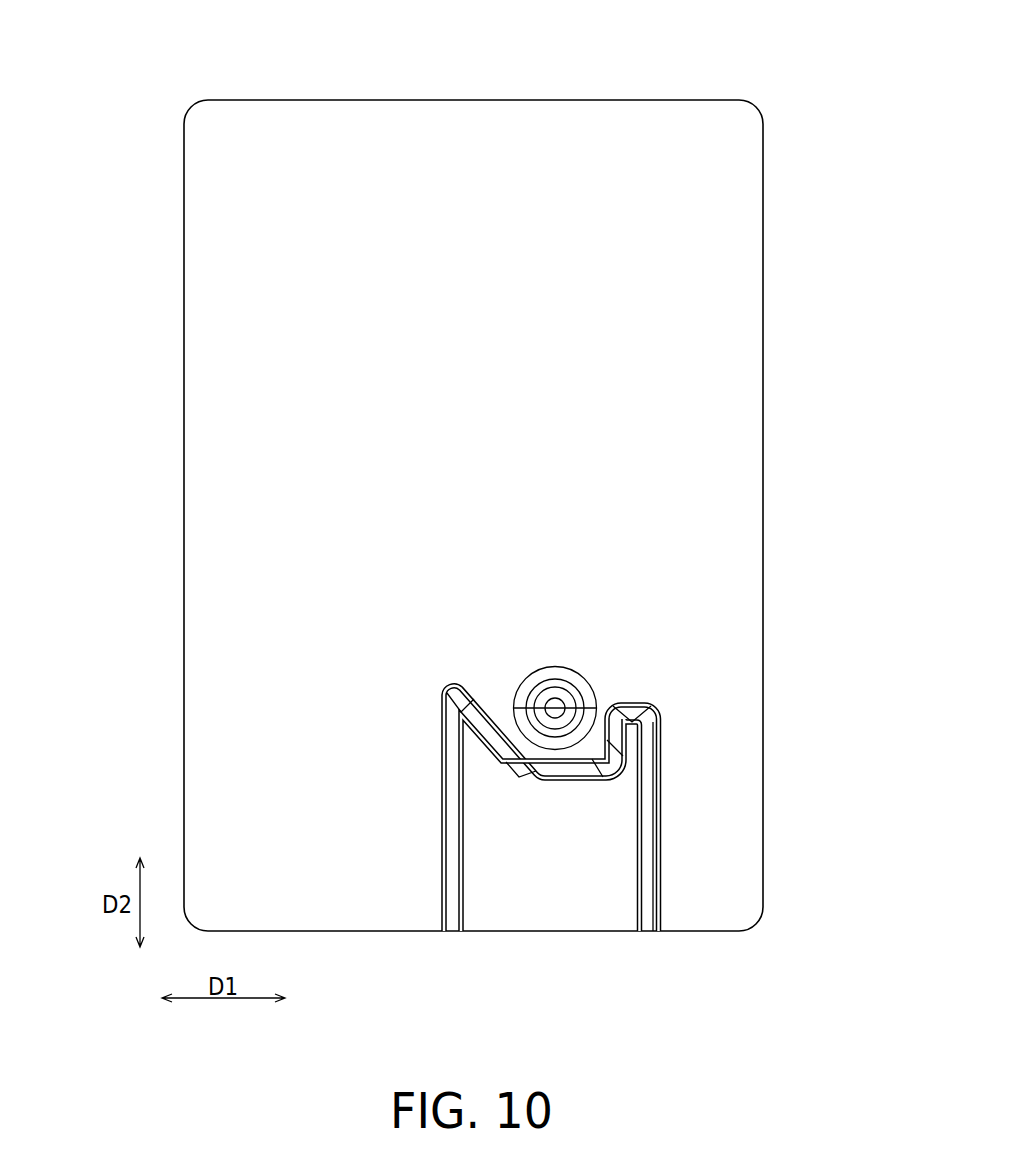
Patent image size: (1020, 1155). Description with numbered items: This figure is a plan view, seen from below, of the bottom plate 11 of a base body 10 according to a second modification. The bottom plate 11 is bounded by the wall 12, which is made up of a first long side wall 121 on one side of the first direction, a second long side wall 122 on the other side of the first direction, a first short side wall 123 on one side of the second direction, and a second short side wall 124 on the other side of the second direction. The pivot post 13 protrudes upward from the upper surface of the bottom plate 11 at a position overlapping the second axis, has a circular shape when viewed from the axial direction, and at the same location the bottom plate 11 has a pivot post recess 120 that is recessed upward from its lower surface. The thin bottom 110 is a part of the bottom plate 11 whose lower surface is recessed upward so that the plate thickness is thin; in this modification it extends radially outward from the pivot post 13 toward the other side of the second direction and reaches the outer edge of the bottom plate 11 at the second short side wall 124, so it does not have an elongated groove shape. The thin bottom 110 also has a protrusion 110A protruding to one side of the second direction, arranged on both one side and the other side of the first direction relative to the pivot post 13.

The base body 10 is at (473, 526).
The bottom plate 11 is at (473, 518).
The wall 12 is at (473, 518).
The first long side wall 121 is at (766, 484).
The second long side wall 122 is at (183, 499).
The first short side wall 123 is at (462, 98).
The second short side wall 124 is at (372, 933).
The pivot post 13 is at (701, 657).
The pivot post recess 120 is at (559, 704).
The thin bottom 110 is at (559, 862).
The protrusion 110A is at (440, 689).